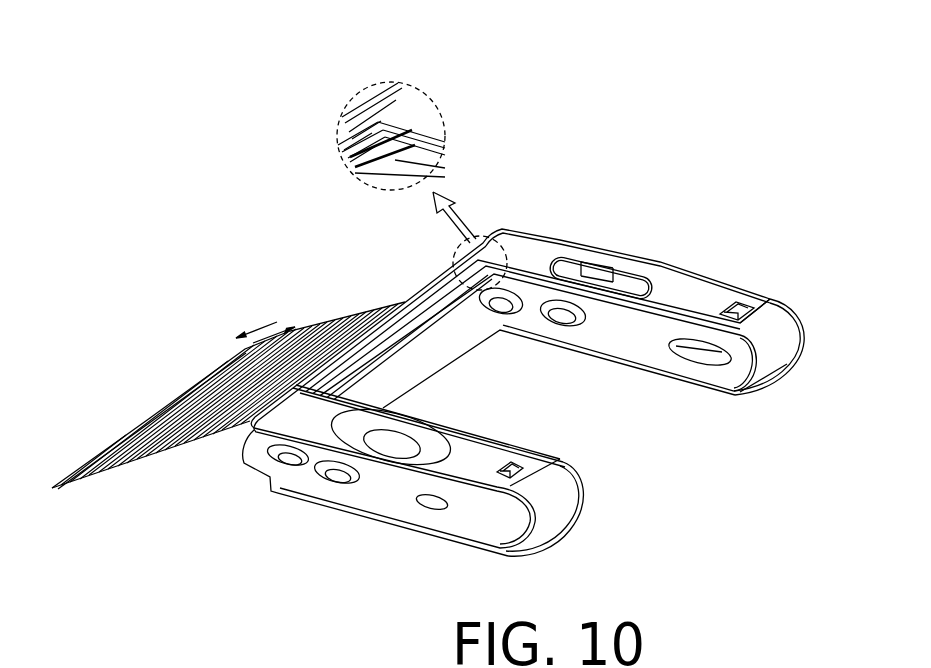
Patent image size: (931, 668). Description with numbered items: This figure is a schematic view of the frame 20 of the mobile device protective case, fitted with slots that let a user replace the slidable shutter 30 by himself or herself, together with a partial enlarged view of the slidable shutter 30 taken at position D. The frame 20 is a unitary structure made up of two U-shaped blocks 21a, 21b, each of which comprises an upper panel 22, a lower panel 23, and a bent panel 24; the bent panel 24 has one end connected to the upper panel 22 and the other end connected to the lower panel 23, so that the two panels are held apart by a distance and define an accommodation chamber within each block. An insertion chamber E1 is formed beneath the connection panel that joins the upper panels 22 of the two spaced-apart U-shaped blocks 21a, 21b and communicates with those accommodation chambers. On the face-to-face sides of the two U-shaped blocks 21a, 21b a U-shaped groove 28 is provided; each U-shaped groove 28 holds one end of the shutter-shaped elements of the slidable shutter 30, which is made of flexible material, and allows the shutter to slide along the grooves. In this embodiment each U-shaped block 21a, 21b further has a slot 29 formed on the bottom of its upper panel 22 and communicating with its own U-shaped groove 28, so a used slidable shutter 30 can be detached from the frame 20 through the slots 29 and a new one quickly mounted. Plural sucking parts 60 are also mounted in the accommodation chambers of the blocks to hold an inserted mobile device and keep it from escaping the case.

The frame 20 is at (622, 242).
The U-shaped block 21a is at (812, 318).
The U-shaped block 21b is at (530, 556).
The upper panel 22 is at (404, 108).
The lower panel 23 is at (533, 313).
The bent panel 24 is at (770, 345).
The U-shaped groove 28 is at (610, 362).
The slot 29 is at (375, 145).
The slidable shutter 30 is at (138, 391).
The sucking part 60 is at (320, 477).
The insertion chamber E1 is at (437, 345).
The position D is at (454, 225).